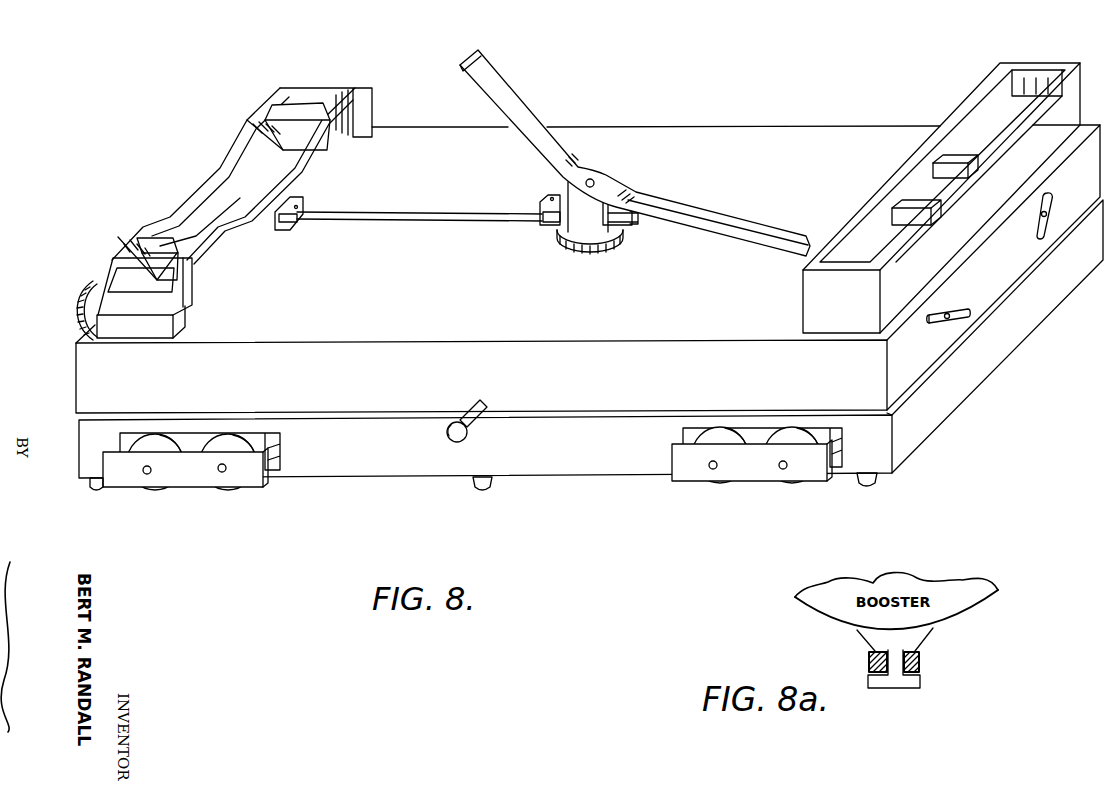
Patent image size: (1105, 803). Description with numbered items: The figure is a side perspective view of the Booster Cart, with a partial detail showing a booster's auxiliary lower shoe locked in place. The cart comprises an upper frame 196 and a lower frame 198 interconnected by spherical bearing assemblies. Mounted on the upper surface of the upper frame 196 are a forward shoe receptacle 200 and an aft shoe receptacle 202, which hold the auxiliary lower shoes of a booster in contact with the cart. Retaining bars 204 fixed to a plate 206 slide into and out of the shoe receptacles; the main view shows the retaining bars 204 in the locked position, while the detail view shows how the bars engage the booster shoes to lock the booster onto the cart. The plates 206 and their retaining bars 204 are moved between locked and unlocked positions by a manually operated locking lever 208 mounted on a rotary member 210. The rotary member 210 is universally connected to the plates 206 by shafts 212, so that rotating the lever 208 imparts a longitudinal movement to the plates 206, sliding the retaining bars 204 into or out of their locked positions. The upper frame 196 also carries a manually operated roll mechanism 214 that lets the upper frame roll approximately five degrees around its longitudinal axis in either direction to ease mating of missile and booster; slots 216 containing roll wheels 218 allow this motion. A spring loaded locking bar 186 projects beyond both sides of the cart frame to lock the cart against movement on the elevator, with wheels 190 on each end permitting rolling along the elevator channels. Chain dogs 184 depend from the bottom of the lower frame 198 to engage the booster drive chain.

In FIG. 8, the chain dogs 184 is at (478, 483).
In FIG. 8, the locking bar 186 is at (480, 406).
In FIG. 8, the wheels 190 is at (468, 441).
In FIG. 8, the upper frame 196 is at (1016, 261).
In FIG. 8, the lower frame 198 is at (983, 366).
In FIG. 8, the forward shoe receptacle 200 is at (172, 331).
In FIG. 8, the aft shoe receptacle 202 is at (1049, 157).
In FIG. 8, the retaining bars 204 is at (310, 107).
In FIG. 8A, the retaining bars 204 is at (921, 665).
In FIG. 8, the plate 206 is at (357, 125).
In FIG. 8, the locking lever 208 is at (500, 80).
In FIG. 8, the rotary member 210 is at (575, 230).
In FIG. 8, the shafts 212 is at (407, 222).
In FIG. 8, the roll mechanism 214 is at (87, 292).
In FIG. 8, the slots 216 is at (931, 320).
In FIG. 8, the roll wheels 218 is at (948, 313).